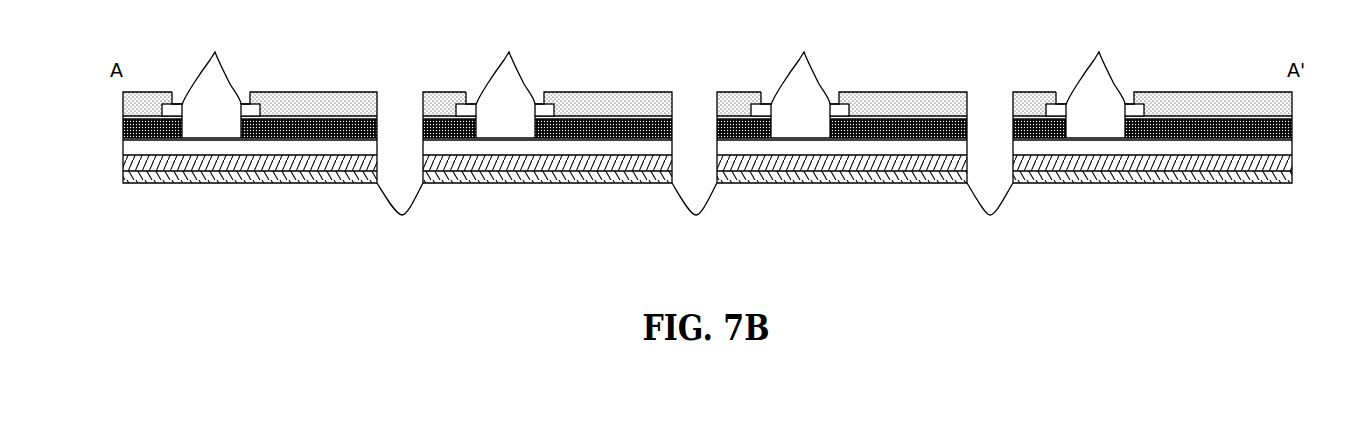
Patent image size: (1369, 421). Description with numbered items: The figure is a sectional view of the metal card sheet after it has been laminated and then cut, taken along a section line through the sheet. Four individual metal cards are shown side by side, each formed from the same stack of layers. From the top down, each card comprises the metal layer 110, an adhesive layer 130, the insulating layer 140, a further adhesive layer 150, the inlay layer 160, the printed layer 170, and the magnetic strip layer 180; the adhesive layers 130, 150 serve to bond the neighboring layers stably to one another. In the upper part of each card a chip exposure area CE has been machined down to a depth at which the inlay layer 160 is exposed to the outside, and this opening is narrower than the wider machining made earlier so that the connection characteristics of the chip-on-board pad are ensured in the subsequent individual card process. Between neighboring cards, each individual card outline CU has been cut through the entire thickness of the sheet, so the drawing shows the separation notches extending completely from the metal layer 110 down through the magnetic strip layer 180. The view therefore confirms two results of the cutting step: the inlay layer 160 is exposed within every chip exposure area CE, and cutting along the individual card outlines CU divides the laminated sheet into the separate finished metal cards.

The metal layer 110 is at (1293, 97).
The adhesive layer 130 is at (1293, 113).
The insulating layer 140 is at (1293, 127).
The adhesive layer 150 is at (1293, 138).
The inlay layer 160 is at (1287, 148).
The printed layer 170 is at (1285, 163).
The magnetic strip layer 180 is at (1281, 175).
The chip exposure area CE is at (653, 64).
The individual card outline CU is at (695, 213).